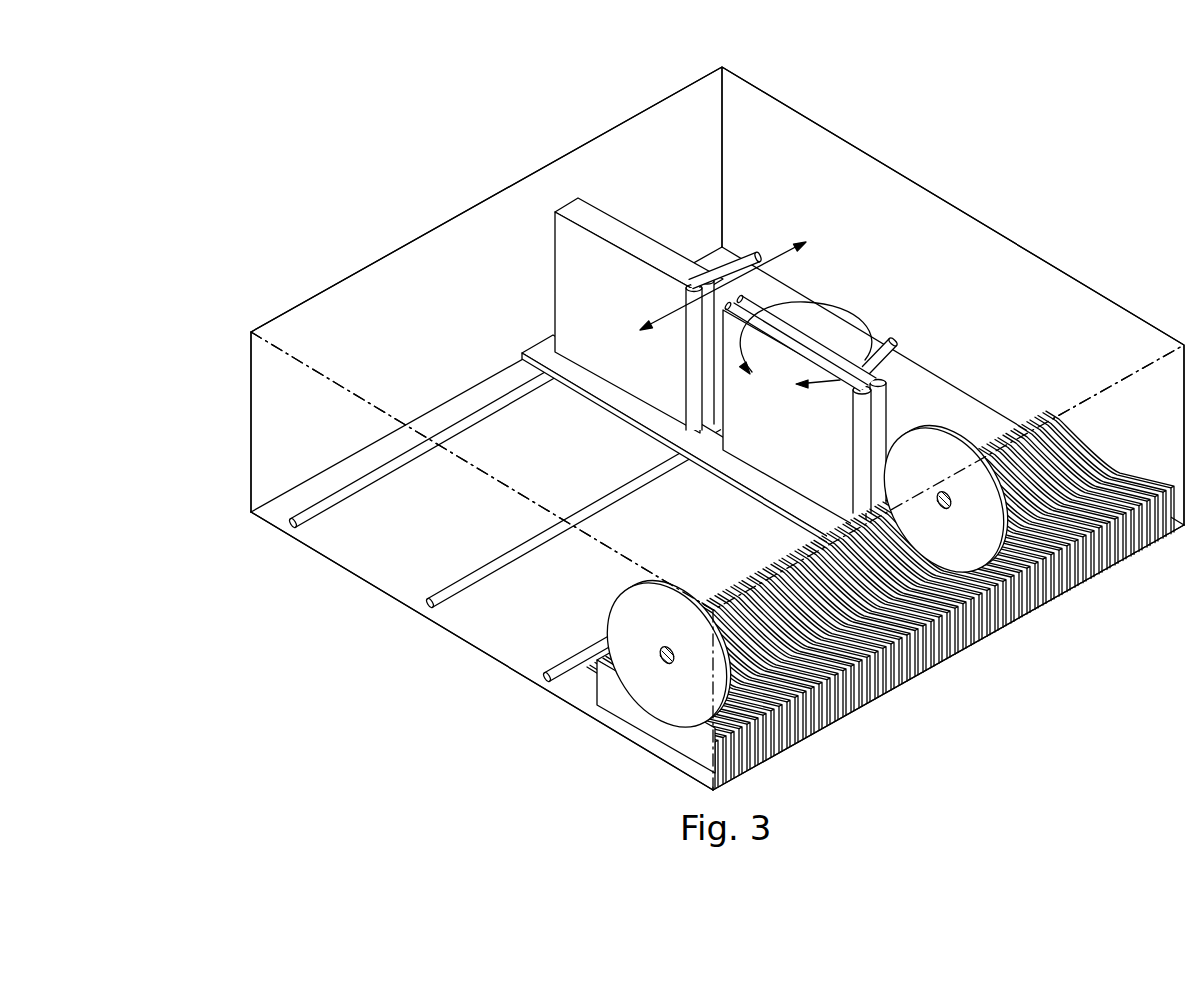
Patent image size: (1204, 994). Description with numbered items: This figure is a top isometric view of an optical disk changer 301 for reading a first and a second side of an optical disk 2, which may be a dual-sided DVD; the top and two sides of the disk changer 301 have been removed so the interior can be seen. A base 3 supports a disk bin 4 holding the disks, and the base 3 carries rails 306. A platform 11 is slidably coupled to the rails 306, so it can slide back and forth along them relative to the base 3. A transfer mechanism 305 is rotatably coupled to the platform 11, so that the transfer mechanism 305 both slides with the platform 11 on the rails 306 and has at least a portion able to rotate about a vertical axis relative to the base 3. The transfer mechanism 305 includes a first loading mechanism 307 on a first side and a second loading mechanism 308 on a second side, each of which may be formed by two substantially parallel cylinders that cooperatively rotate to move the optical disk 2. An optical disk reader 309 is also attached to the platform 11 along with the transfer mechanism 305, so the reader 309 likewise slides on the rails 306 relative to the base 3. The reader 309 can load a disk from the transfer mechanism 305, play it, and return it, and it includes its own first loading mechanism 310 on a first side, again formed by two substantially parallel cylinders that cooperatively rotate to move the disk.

The optical disk changer 301 is at (838, 105).
The optical disk reader 309 is at (638, 246).
The first loading mechanism 310 is at (697, 281).
The second loading mechanism 308 is at (764, 258).
The transfer mechanism 305 is at (800, 340).
The first loading mechanism 307 is at (896, 352).
The platform 11 is at (658, 446).
The rails 306 is at (290, 527).
The base 3 is at (547, 481).
The optical disk 2 is at (968, 525).
The disk bin 4 is at (622, 704).